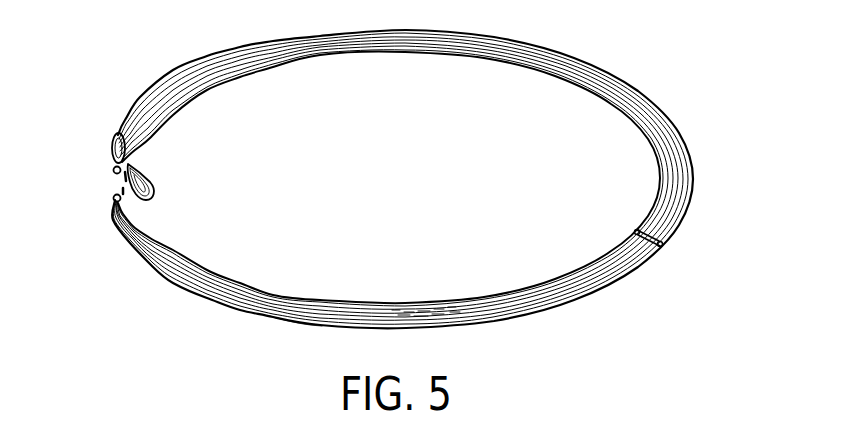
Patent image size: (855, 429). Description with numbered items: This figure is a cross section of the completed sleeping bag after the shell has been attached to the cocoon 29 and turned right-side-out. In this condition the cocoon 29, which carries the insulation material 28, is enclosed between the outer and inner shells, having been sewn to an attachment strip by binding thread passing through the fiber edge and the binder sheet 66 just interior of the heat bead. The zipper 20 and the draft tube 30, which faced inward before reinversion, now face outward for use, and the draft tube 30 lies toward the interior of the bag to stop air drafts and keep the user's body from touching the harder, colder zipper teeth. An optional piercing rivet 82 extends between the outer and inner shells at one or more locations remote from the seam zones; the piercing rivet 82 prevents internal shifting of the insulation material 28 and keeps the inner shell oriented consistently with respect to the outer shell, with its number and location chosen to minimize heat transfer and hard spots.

The zipper 20 is at (116, 195).
The insulation material 28 is at (402, 52).
The cocoon 29 is at (292, 324).
The draft tube 30 is at (152, 180).
The binder sheet 66 is at (112, 133).
The piercing rivet 82 is at (666, 243).